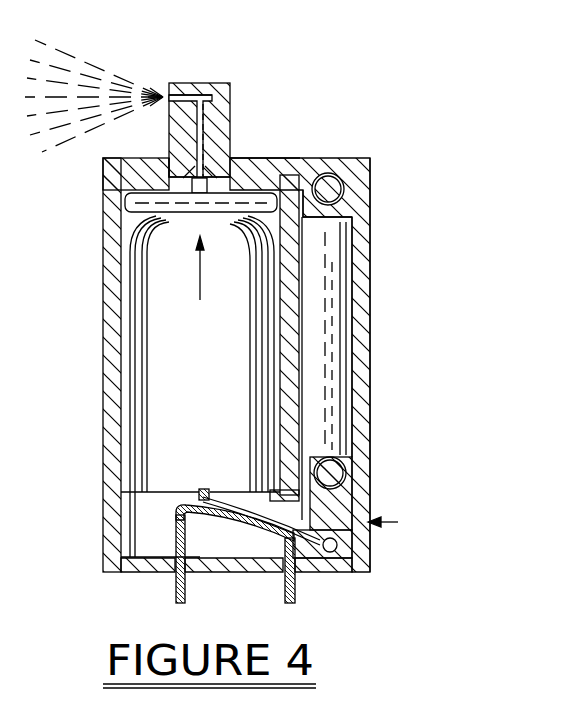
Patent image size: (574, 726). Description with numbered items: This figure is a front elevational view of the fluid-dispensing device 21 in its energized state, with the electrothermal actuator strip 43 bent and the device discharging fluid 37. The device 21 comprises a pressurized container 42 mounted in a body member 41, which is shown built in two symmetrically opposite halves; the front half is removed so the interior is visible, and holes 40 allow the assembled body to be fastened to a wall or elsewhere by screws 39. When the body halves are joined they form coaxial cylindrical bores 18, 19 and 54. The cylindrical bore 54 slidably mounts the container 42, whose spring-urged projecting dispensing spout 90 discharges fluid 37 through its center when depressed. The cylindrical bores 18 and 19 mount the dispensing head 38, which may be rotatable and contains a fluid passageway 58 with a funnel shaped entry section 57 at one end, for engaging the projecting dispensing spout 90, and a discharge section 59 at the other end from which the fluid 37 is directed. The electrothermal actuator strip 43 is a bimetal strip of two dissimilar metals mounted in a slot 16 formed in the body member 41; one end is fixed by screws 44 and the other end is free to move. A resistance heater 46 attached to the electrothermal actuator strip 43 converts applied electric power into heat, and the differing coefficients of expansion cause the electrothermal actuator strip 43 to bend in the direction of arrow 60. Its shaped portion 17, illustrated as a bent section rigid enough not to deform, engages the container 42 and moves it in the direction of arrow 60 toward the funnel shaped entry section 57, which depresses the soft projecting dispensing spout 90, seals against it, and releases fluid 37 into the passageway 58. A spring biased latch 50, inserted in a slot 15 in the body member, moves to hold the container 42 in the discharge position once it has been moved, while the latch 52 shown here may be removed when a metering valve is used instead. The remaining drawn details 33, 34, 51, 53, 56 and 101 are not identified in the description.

The slot 15 is at (298, 182).
The slot 16 is at (352, 565).
The shaped portion 17 is at (207, 493).
The cylindrical bore 18 is at (242, 175).
The cylindrical bore 19 is at (230, 179).
The device 21 is at (360, 367).
The inlet tube 33 is at (176, 593).
The outlet tube 34 is at (295, 593).
The fluid 37 is at (53, 86).
The dispensing head 38 is at (230, 96).
The screws 39 is at (341, 190).
The holes 40 is at (336, 202).
The body member 41 is at (355, 410).
The pressurized container 42 is at (160, 306).
The electrothermal actuator strip 43 is at (199, 497).
The screws 44 is at (340, 547).
The resistance heater 46 is at (233, 528).
The spring biased latch 50 is at (300, 325).
The chamber 51 is at (325, 285).
The latch 52 is at (300, 495).
The flow direction arrow 53 is at (397, 522).
The cylindrical bore 54 is at (152, 548).
The valve seat 56 is at (172, 178).
The entry section 57 is at (175, 172).
The fluid passageway 58 is at (203, 141).
The discharge section 59 is at (178, 98).
The arrow 60 is at (200, 287).
The projecting dispensing spout 90 is at (192, 192).
The valve plate 101 is at (135, 199).